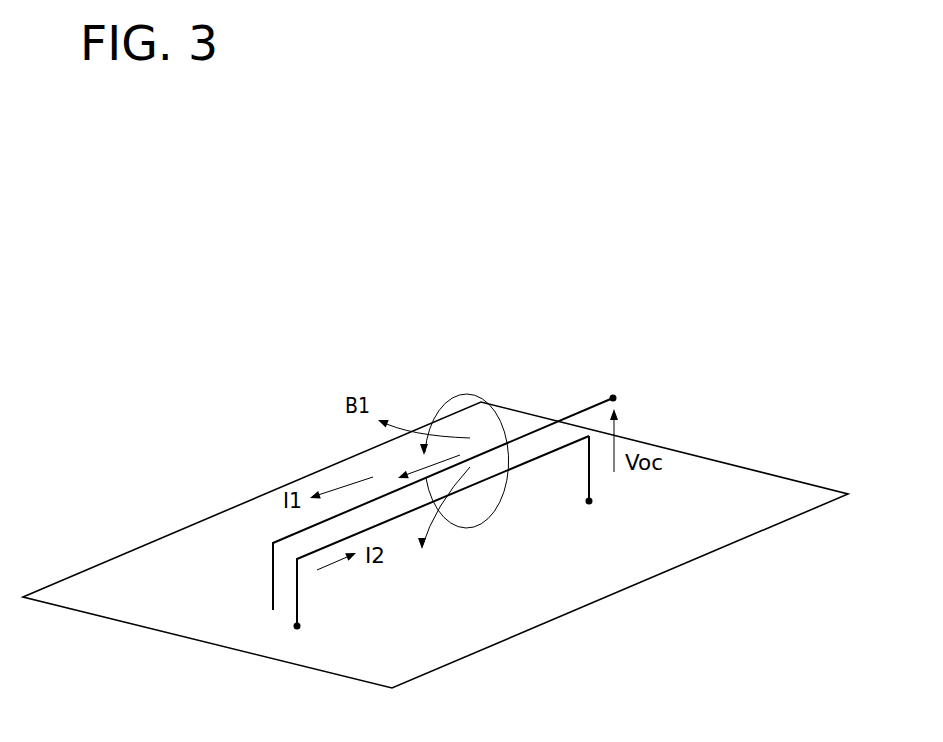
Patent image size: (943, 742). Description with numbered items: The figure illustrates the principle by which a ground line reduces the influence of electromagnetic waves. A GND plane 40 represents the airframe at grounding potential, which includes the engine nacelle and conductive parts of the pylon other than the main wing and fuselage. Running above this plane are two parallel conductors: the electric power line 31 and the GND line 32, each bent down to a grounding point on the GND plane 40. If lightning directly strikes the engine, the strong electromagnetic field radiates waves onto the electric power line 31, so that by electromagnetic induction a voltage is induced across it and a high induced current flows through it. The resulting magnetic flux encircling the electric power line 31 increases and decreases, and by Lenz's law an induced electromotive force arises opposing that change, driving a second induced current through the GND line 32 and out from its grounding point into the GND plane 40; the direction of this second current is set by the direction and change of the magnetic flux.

The electric power line 31 is at (585, 410).
The GND line 32 is at (548, 453).
The GND plane 40 is at (743, 467).